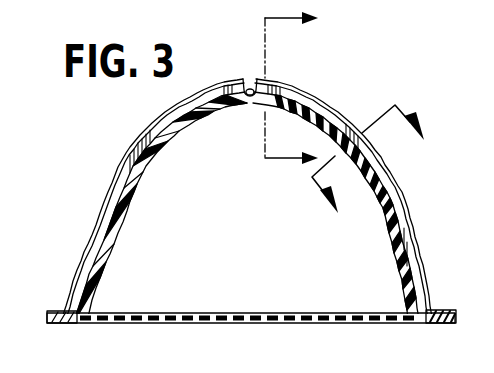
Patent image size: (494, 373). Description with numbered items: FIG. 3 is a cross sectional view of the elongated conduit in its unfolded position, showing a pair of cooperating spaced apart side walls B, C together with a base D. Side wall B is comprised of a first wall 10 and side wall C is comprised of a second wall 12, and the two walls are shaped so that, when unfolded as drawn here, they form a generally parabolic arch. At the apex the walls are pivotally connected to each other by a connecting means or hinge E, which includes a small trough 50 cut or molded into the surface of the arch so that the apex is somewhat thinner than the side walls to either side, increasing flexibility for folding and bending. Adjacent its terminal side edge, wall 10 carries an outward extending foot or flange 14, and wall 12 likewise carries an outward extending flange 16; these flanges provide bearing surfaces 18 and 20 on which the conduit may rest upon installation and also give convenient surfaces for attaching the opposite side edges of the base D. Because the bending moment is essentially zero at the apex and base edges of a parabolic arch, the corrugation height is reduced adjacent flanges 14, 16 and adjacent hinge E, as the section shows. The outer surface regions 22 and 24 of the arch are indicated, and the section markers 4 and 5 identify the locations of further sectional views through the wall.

The first wall 10 is at (116, 241).
The second wall 12 is at (396, 240).
The flange 14 is at (60, 312).
The flange 16 is at (444, 310).
The bearing surface 18 is at (64, 334).
The bearing surface 20 is at (438, 336).
The left outer cover skin 22 is at (118, 138).
The right outer cover skin 24 is at (380, 155).
The trough 50 is at (250, 100).
The side wall B is at (104, 188).
The side wall C is at (415, 197).
The base D is at (260, 330).
The hinge E is at (243, 70).
The section line 4- 4 is at (302, 83).
The section line 5- 5 is at (376, 171).